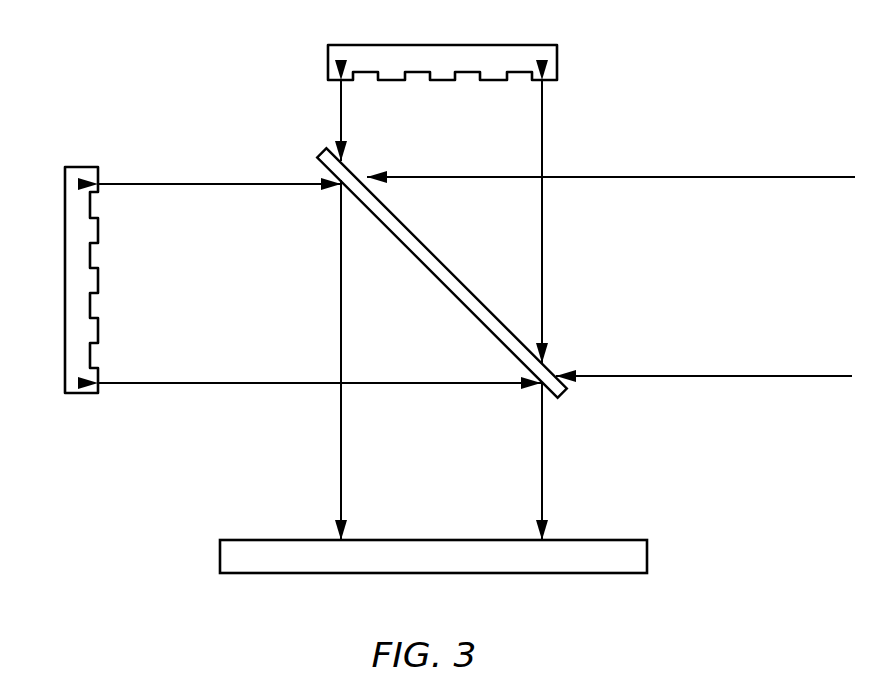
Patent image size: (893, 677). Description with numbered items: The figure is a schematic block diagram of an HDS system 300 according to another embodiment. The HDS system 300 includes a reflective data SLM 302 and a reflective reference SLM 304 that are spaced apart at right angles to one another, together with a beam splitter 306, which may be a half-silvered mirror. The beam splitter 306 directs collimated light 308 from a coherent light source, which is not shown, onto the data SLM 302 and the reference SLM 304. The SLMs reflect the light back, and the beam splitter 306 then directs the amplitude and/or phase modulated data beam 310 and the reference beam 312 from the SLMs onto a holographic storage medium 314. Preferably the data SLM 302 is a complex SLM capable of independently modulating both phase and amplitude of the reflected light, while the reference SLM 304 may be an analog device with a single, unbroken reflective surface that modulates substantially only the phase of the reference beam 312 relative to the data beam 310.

The HDS system 300 is at (716, 68).
The data SLM 302 is at (80, 167).
The reference SLM 304 is at (328, 60).
The beam splitter 306 is at (322, 150).
The collimated light 308 is at (689, 285).
The data beam 310 is at (233, 285).
The reference beam 312 is at (493, 255).
The holographic storage medium 314 is at (240, 540).